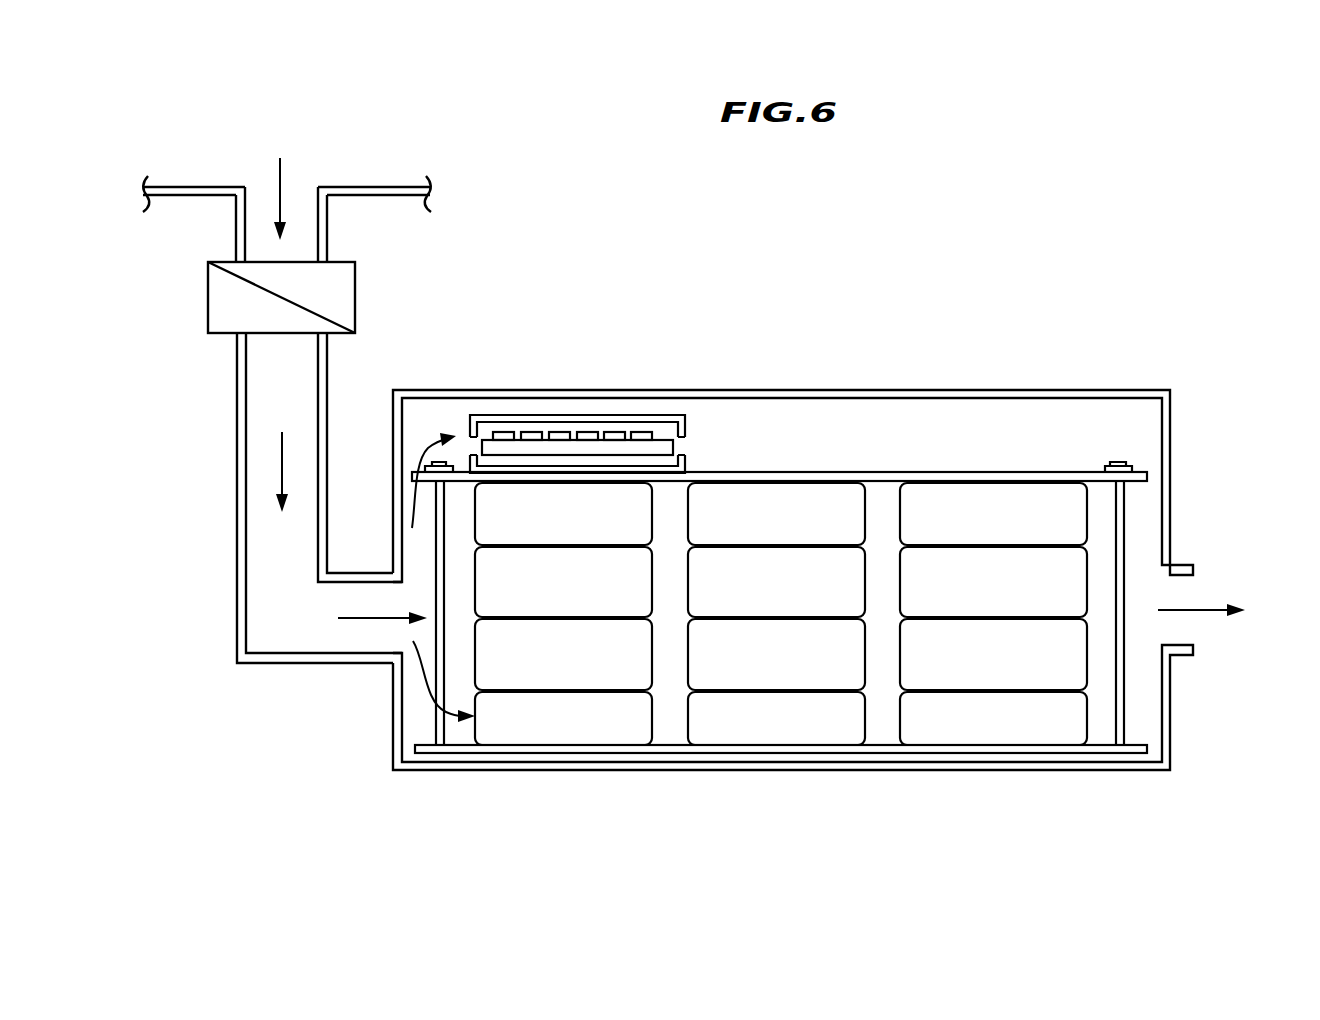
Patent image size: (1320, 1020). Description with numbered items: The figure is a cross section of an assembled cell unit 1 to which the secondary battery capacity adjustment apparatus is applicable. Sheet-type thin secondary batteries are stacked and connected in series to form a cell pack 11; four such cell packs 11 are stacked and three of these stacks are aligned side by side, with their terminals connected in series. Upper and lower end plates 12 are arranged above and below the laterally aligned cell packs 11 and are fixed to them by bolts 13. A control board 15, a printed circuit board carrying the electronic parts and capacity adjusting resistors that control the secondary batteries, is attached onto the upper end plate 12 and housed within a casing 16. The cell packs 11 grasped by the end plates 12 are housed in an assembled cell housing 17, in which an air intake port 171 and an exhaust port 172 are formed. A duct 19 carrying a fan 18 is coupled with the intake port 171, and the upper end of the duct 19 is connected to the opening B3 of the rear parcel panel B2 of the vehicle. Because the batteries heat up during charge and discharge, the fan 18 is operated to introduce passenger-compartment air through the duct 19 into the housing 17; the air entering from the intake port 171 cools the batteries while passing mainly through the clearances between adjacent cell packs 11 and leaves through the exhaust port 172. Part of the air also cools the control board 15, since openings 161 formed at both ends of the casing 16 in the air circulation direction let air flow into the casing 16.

The assembled cell unit 1 is at (1048, 264).
The cell pack 11 is at (620, 510).
The end plate 12 is at (884, 471).
The bolt 13 is at (437, 690).
The control board 15 is at (572, 447).
The casing 16 is at (636, 415).
The opening 161 is at (472, 446).
The assembled cell housing 17 is at (987, 389).
The air intake port 171 is at (400, 654).
The exhaust port 172 is at (1178, 638).
The fan 18 is at (338, 291).
The duct 19 is at (237, 456).
The rear parcel panel B2 is at (196, 186).
The opening B3 is at (304, 195).